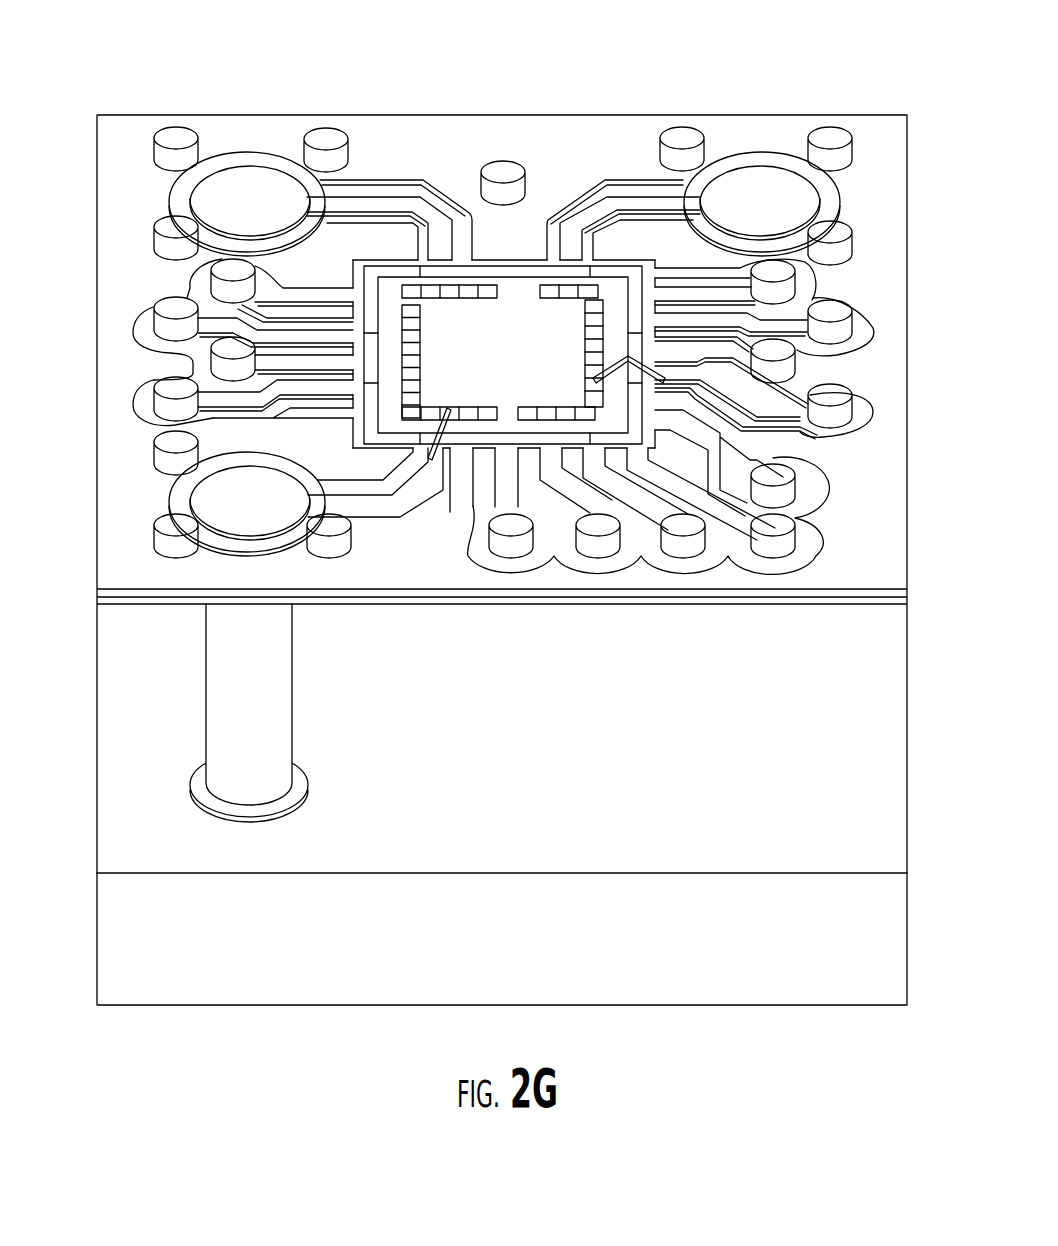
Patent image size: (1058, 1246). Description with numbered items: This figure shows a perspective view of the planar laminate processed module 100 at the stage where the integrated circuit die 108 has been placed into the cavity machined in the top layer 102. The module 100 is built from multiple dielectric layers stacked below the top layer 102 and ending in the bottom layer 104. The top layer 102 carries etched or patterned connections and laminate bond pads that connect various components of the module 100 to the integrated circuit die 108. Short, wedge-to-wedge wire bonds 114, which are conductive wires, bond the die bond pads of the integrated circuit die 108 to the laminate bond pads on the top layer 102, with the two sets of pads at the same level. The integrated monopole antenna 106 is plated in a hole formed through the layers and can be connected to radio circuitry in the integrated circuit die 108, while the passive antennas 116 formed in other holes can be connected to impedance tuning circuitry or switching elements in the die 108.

The planar laminate processed module 100 is at (140, 58).
The top layer 102 is at (870, 563).
The bottom layer 104 is at (880, 1007).
The integrated monopole antenna 106 is at (215, 508).
The integrated circuit die 108 is at (517, 330).
The wire bonds 114 is at (443, 408).
The passive antennas 116 is at (240, 188).